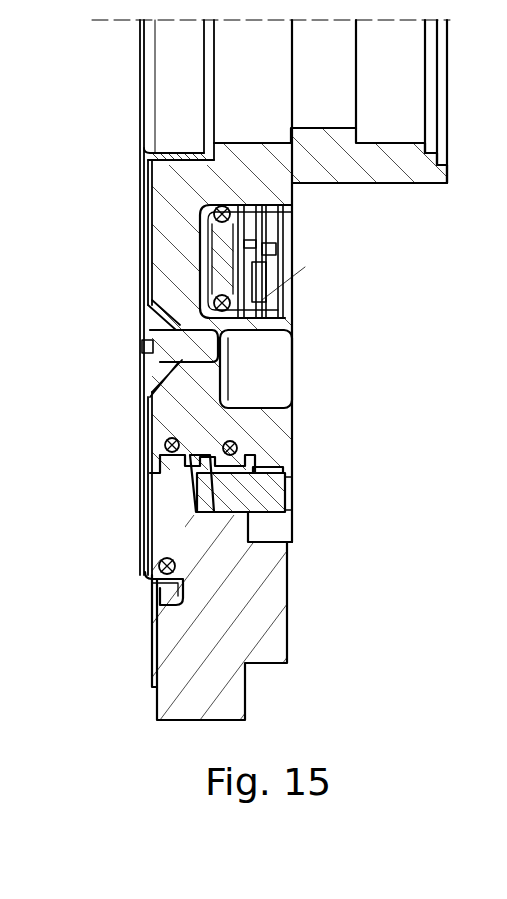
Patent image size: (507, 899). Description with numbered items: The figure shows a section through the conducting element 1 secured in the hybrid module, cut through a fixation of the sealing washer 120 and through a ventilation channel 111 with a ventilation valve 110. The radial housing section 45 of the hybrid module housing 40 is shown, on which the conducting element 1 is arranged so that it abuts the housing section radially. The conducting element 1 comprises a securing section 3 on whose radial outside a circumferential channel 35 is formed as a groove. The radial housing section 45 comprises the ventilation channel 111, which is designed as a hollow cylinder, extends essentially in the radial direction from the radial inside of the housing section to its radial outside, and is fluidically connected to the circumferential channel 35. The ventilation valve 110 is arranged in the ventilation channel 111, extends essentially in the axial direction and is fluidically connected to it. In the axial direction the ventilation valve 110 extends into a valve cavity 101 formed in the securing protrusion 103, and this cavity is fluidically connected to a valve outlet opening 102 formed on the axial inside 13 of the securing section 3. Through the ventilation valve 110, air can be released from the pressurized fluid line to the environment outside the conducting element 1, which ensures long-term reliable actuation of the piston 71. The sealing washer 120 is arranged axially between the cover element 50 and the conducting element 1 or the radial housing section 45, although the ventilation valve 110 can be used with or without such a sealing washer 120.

The conducting element 1 is at (276, 374).
The securing section 3 is at (272, 418).
The axial inside 13 is at (293, 420).
The circumferential channel 35 is at (173, 430).
The hybrid module housing 40 is at (217, 617).
The radial housing section 45 is at (268, 650).
The cover element 50 is at (139, 185).
The piston 71 is at (280, 285).
The valve cavity 101 is at (293, 466).
The valve outlet opening 102 is at (293, 495).
The securing protrusion 103 is at (293, 535).
The ventilation valve 110 is at (178, 497).
The ventilation channel 111 is at (178, 462).
The sealing washer 120 is at (143, 228).